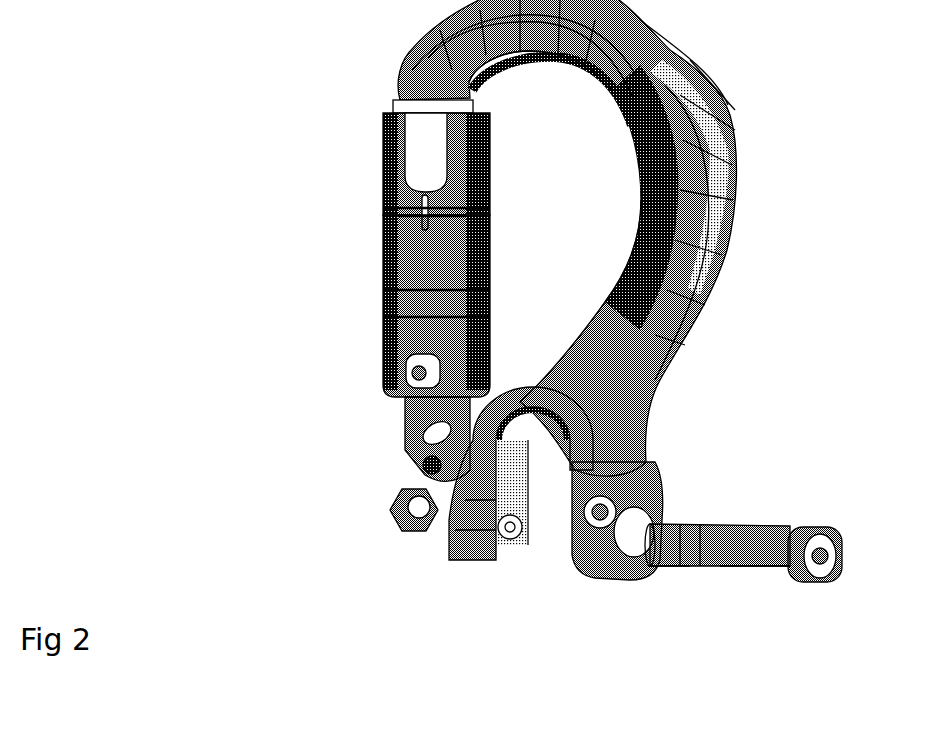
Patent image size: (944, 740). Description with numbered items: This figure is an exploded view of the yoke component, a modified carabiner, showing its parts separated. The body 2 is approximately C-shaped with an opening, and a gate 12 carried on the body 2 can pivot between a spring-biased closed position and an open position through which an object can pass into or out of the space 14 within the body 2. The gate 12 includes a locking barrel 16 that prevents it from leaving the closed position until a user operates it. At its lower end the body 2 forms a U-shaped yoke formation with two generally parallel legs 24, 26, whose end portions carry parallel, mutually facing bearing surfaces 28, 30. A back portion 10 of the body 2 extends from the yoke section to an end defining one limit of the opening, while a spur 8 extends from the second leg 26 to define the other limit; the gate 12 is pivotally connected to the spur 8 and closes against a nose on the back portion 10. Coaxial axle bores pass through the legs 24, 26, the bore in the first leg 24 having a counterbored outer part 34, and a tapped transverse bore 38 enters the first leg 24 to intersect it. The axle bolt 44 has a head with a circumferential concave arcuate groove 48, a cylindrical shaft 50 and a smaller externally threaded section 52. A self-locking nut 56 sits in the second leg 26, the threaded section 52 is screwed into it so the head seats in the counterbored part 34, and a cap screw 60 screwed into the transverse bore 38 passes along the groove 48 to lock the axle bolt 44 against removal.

The body 2 is at (760, 204).
The spur 8 is at (403, 428).
The back portion 10 is at (677, 43).
The gate 12 is at (347, 200).
The space 14 is at (531, 185).
The locking barrel 16 is at (383, 337).
The first leg 24 is at (640, 433).
The second leg 26 is at (420, 467).
The bearing surface 28 is at (130, 14).
The bearing surface 30 is at (297, 14).
The outer part of the axle bore 34 is at (653, 580).
The transverse bore 38 is at (567, 543).
The axle bolt 44 is at (722, 487).
The circumferential concave arcuate groove 48 is at (805, 508).
The cylindrical shaft 50 is at (743, 570).
The externally threaded section 52 is at (662, 555).
The self-locking nut 56 is at (393, 527).
The cap screw 60 is at (453, 555).